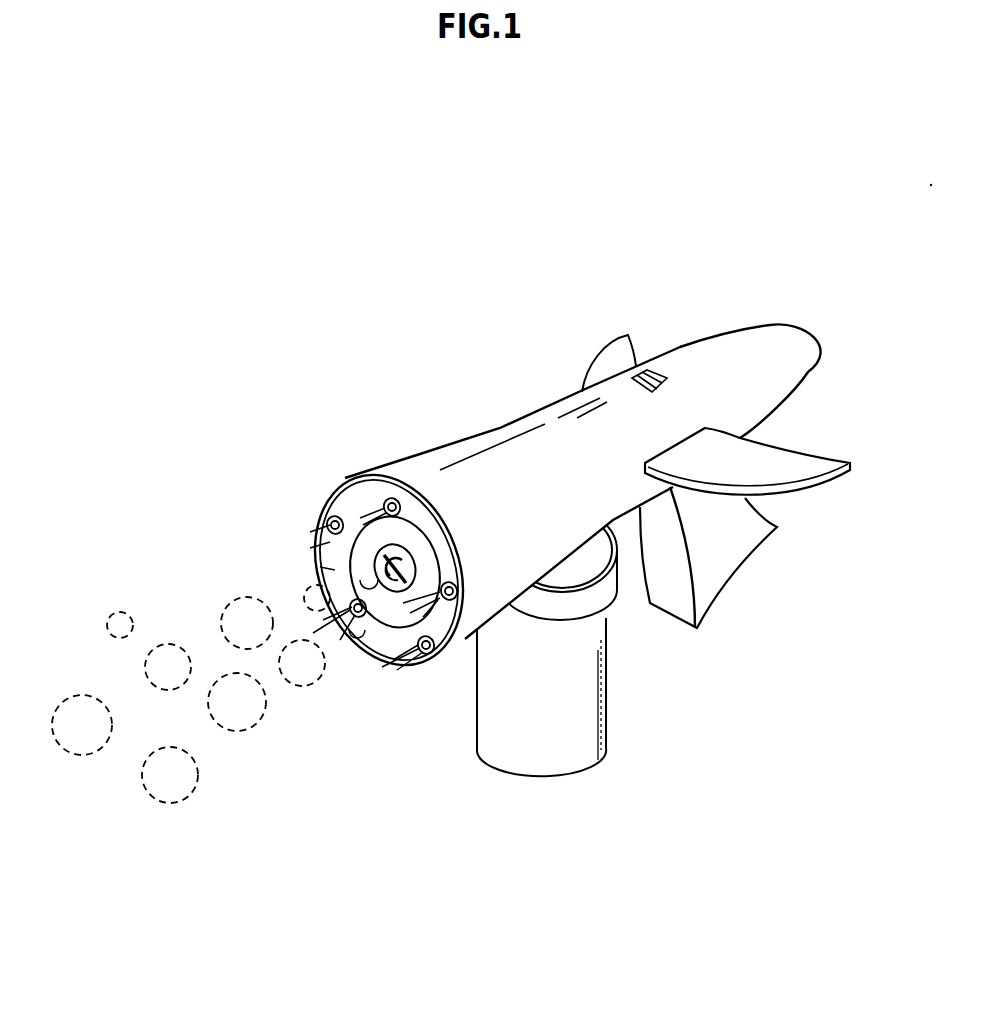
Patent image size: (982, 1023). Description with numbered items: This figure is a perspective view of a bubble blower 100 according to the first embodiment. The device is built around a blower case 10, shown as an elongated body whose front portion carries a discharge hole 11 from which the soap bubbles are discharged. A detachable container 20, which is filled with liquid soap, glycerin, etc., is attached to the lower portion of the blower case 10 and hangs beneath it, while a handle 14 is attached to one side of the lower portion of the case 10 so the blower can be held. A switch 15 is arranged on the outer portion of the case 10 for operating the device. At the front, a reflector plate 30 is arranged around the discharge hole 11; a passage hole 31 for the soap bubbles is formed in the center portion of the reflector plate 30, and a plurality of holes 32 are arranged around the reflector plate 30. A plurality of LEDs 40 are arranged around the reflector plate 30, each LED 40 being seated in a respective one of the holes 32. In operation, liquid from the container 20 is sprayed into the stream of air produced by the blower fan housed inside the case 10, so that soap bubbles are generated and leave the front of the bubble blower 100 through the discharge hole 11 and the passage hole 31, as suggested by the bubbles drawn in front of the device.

The bubble blower 100 is at (363, 338).
The blower case 10 is at (450, 446).
The discharge hole 11 is at (377, 547).
The handle 14 is at (715, 550).
The switch 15 is at (656, 367).
The detachable container 20 is at (603, 708).
The reflector plate 30 is at (377, 538).
The passage hole 31 is at (330, 570).
The holes 32 is at (352, 618).
The LEDs 40 is at (410, 667).